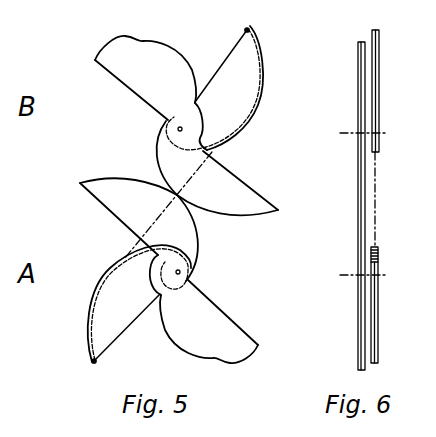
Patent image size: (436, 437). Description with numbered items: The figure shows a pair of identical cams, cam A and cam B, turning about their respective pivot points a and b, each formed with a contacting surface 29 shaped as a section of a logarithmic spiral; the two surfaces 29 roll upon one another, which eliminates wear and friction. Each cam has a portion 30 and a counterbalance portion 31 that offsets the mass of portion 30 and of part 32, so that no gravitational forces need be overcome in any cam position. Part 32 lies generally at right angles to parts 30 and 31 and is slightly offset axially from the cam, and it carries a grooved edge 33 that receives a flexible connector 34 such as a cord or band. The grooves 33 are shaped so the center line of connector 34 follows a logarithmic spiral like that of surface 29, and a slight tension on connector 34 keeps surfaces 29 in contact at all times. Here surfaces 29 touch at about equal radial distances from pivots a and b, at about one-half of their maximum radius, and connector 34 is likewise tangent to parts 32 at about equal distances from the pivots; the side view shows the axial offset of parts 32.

In FIG. 5, the contacting surface 29 is at (156, 152).
In FIG. 6, the contacting surface 29 is at (322, 206).
In FIG. 6, the portion 30 is at (322, 206).
In FIG. 5, the counterbalance portion 31 is at (158, 37).
In FIG. 6, the counterbalance portion 31 is at (358, 352).
In FIG. 5, the part 32 is at (228, 66).
In FIG. 6, the part 32 is at (378, 88).
In FIG. 5, the grooved edge 33 is at (262, 72).
In FIG. 5, the flexible connector 34 is at (210, 169).
In FIG. 6, the flexible connector 34 is at (376, 198).
In FIG. 5, the pivot point of cam A a is at (182, 272).
In FIG. 5, the pivot point of cam B b is at (178, 128).